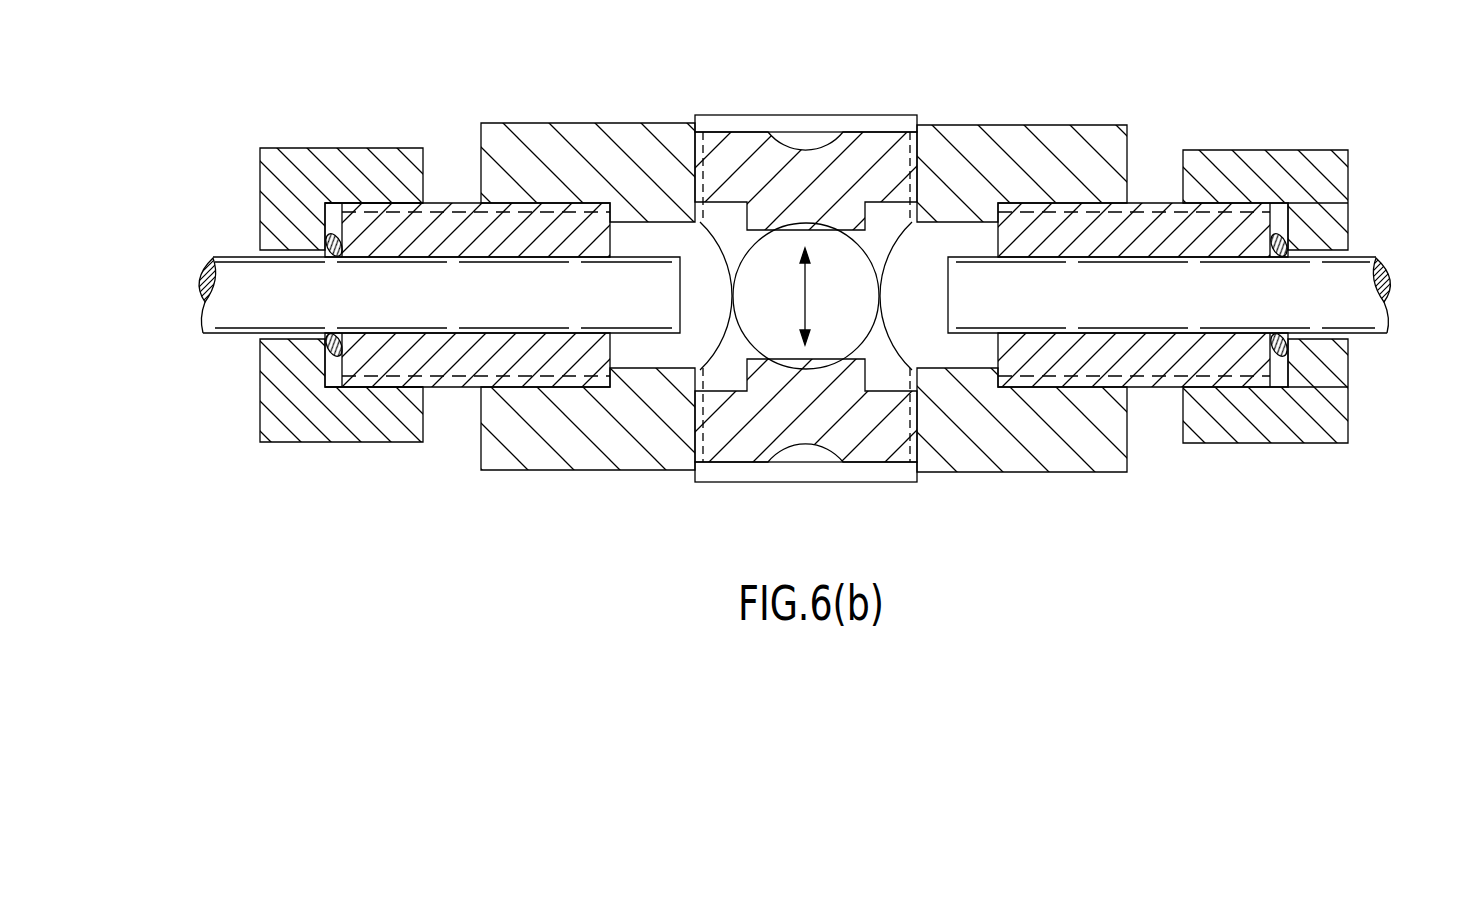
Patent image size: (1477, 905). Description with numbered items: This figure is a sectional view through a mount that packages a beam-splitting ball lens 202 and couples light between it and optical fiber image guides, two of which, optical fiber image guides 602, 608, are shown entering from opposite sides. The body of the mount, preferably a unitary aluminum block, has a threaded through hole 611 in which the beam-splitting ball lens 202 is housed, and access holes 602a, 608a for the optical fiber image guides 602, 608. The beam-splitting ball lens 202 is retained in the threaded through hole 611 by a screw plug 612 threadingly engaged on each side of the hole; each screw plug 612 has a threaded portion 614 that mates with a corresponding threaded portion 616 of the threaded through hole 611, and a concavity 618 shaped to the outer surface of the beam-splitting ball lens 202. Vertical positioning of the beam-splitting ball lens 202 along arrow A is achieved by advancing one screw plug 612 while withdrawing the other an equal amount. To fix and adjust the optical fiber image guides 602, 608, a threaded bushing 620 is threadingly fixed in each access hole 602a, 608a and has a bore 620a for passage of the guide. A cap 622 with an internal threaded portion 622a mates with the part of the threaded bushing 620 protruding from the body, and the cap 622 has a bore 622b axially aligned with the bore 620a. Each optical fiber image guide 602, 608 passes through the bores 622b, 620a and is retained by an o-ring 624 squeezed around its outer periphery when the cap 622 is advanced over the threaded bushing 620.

The beam-splitting ball lens 202 is at (878, 273).
The optical fiber image guide 602 is at (1380, 260).
The access hole 602a is at (935, 215).
The optical fiber image guide 608 is at (237, 255).
The access hole 608a is at (637, 220).
The threaded through hole 611 is at (870, 278).
The screw plug 612 is at (727, 113).
The threaded portion 614 is at (703, 380).
The threaded portion 616 is at (697, 380).
The concavity 618 is at (803, 222).
The threaded bushing 620 is at (453, 203).
The bore 620a is at (462, 336).
The cap 622 is at (292, 148).
The internal threaded portion 622a is at (327, 388).
The bore 622b is at (330, 338).
The o-ring 624 is at (330, 348).